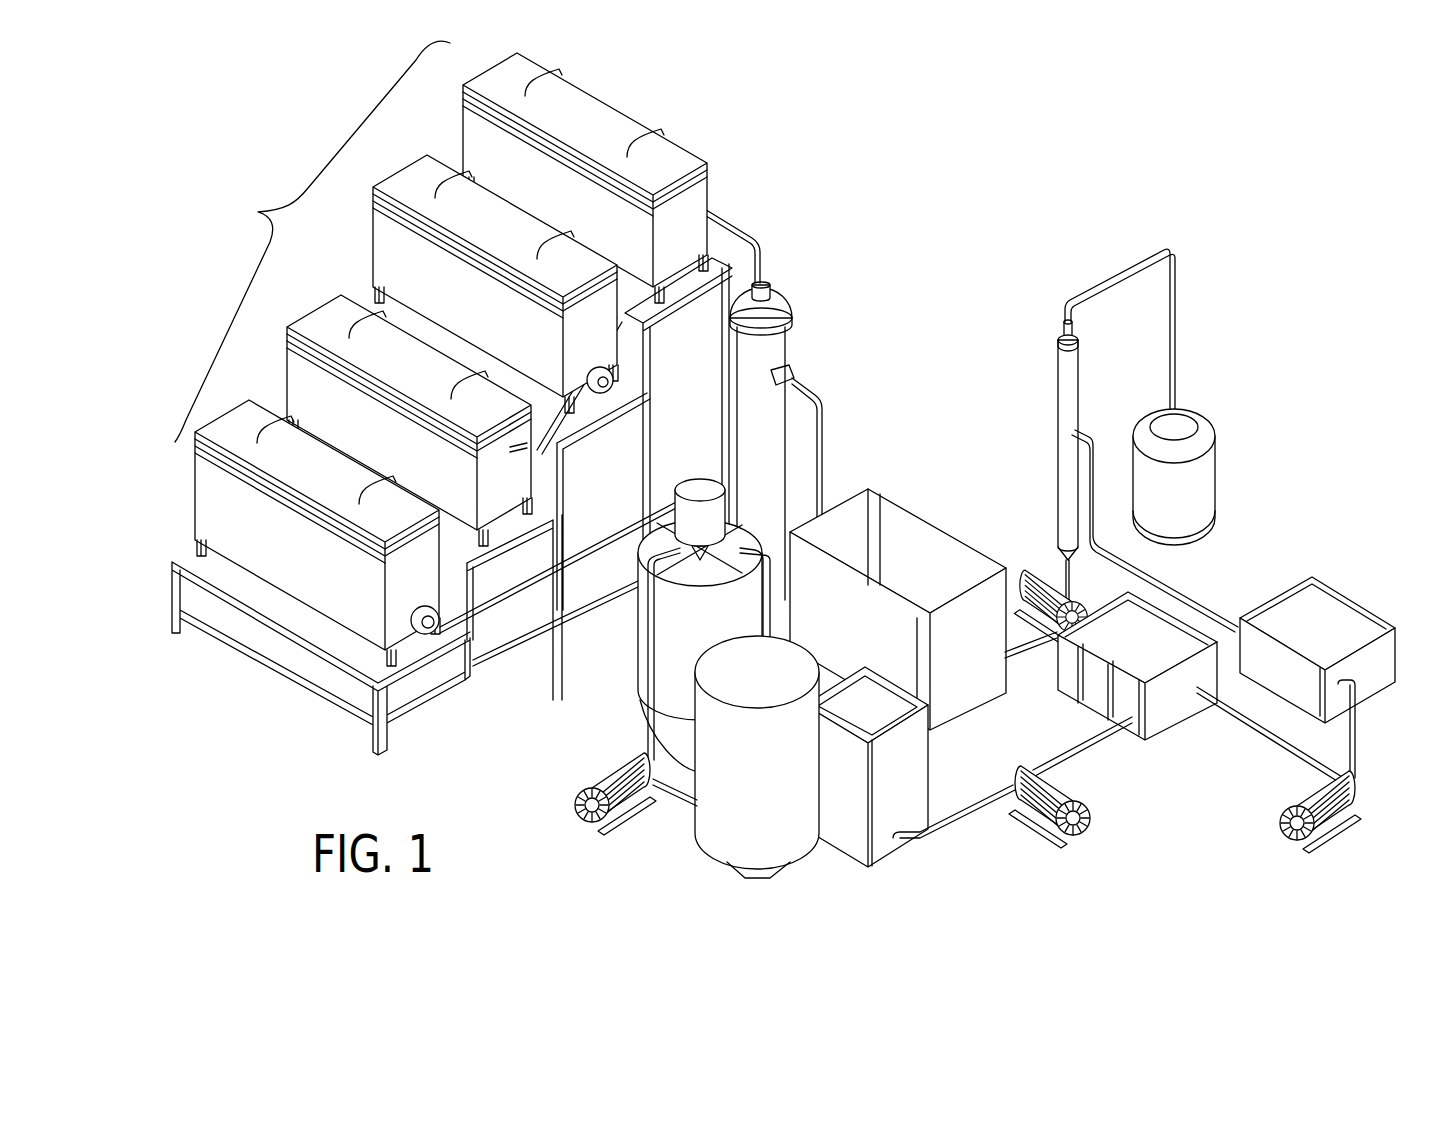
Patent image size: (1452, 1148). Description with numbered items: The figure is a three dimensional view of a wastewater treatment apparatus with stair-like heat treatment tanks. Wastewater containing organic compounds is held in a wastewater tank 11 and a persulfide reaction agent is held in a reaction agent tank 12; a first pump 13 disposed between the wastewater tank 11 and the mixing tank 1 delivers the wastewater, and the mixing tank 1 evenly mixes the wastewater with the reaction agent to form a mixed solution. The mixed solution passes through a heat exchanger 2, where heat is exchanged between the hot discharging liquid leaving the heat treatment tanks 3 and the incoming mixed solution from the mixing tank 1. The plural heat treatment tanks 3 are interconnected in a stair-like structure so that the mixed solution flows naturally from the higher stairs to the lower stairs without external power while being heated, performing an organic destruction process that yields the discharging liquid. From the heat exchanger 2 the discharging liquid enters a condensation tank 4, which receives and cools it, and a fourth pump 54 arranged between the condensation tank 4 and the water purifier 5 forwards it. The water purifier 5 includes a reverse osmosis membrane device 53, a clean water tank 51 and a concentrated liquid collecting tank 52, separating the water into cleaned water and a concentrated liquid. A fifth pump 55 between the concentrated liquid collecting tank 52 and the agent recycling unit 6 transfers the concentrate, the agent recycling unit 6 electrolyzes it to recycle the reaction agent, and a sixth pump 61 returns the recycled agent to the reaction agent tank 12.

The mixing tank 1 is at (635, 655).
The wastewater tank 11 is at (706, 842).
The reaction agent tank 12 is at (882, 850).
The first pump 13 is at (578, 789).
The heat exchanger 2 is at (780, 343).
The heat treatment tanks 3 is at (440, 398).
The condensation tank 4 is at (888, 503).
The water purifier 5 is at (1127, 399).
The clean water tank 51 is at (1207, 477).
The concentrated liquid collecting tank 52 is at (1278, 593).
The reverse osmosis membrane device 53 is at (1065, 383).
The fourth pump 54 is at (1013, 560).
The fifth pump 55 is at (1280, 807).
The agent recycling unit 6 is at (1183, 710).
The sixth pump 61 is at (1092, 825).